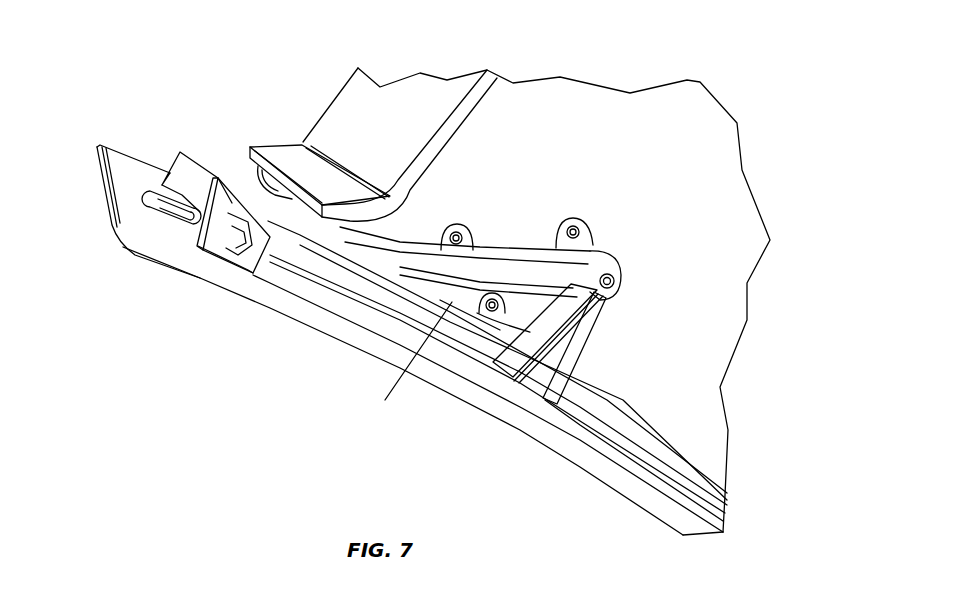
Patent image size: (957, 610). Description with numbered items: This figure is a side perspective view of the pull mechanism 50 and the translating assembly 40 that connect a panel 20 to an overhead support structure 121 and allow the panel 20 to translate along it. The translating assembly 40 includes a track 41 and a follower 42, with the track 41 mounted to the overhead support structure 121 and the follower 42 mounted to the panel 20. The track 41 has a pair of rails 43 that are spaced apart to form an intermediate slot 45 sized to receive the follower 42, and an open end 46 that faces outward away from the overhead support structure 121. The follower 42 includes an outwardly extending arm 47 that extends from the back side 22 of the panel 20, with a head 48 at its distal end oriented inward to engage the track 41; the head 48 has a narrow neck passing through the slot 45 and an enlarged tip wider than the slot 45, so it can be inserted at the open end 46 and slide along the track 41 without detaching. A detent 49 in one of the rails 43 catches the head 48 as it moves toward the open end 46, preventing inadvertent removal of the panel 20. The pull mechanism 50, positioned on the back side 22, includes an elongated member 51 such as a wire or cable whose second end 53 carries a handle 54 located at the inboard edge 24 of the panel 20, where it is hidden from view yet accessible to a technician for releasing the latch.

The panel 20 is at (213, 275).
The back side 22 is at (123, 160).
The inboard edge 24 is at (100, 183).
The translating assembly 40 is at (506, 319).
The track 41 is at (442, 232).
The follower 42 is at (580, 302).
The rails 43 is at (530, 258).
The slot 45 is at (473, 232).
The open end 46 is at (413, 277).
The arm 47 is at (570, 360).
The head 48 is at (590, 267).
The detent 49 is at (385, 400).
The pull mechanism 50 is at (460, 363).
The elongated member 51 is at (397, 317).
The second end 53 is at (192, 220).
The handle 54 is at (163, 203).
The overhead support structure 121 is at (653, 143).